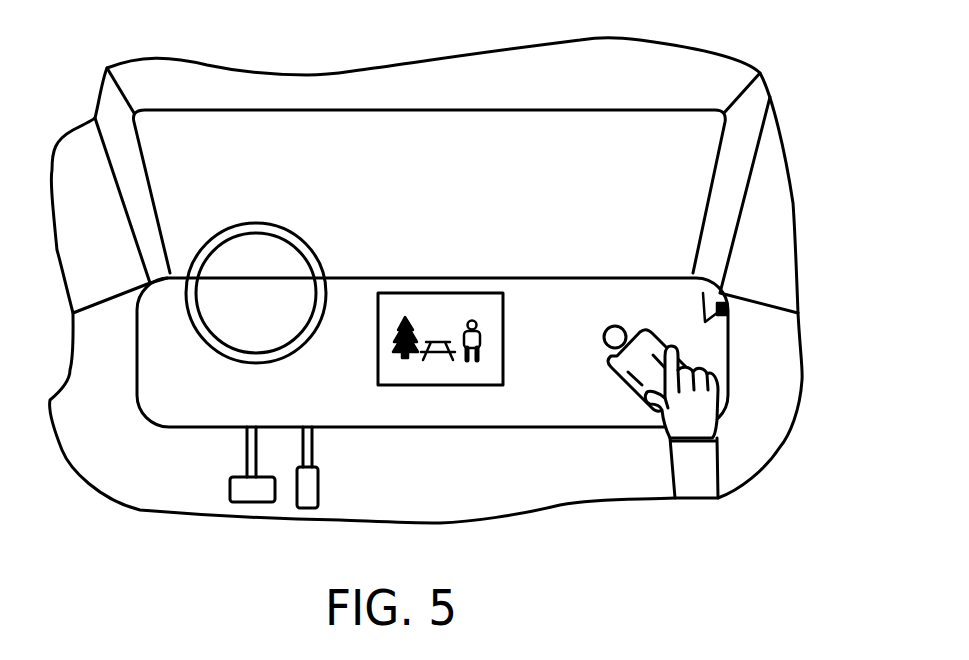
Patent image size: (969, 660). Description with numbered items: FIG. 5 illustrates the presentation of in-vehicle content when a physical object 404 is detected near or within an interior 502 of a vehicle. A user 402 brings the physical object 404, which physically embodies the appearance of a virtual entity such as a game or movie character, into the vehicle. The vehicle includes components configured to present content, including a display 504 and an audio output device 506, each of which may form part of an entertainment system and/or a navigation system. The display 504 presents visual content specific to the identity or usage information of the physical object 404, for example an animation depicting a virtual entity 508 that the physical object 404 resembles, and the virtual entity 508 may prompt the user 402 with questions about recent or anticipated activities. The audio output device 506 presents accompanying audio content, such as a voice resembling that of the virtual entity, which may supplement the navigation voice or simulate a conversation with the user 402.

The interior 502 is at (613, 87).
The display 504 is at (423, 298).
The virtual entity 508 is at (474, 321).
The audio output device 506 is at (703, 293).
The physical object 404 is at (606, 333).
The user 402 is at (713, 420).